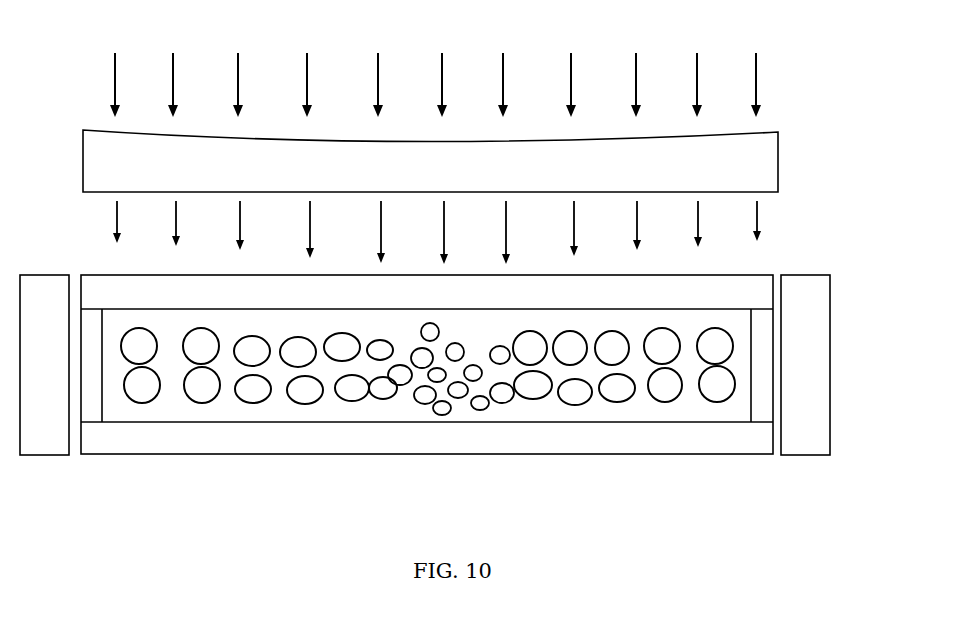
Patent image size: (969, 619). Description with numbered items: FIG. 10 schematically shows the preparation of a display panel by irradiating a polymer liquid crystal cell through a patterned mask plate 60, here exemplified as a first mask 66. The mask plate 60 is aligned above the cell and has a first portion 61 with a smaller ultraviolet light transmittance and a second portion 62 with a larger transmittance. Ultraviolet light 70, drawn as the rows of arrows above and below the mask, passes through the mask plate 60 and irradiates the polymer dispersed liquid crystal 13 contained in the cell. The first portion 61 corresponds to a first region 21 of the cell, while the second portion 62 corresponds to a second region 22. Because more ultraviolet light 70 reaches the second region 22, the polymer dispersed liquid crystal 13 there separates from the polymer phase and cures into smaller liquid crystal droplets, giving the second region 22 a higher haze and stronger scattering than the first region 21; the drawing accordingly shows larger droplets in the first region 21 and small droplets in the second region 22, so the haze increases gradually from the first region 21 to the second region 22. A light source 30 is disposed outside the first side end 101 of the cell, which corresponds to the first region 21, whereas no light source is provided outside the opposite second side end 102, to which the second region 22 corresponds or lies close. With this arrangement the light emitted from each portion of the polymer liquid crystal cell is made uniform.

The ultraviolet light 70 is at (757, 80).
The mask plate 60 is at (452, 107).
The first mask 66 is at (430, 161).
The first portion 61 is at (106, 159).
The second portion 62 is at (405, 168).
The light source 30 is at (810, 410).
The first side end 101 is at (100, 388).
The second side end 102 is at (750, 390).
The first region 21 is at (117, 395).
The polymer dispersed liquid crystal 13 is at (716, 381).
The second region 22 is at (445, 388).